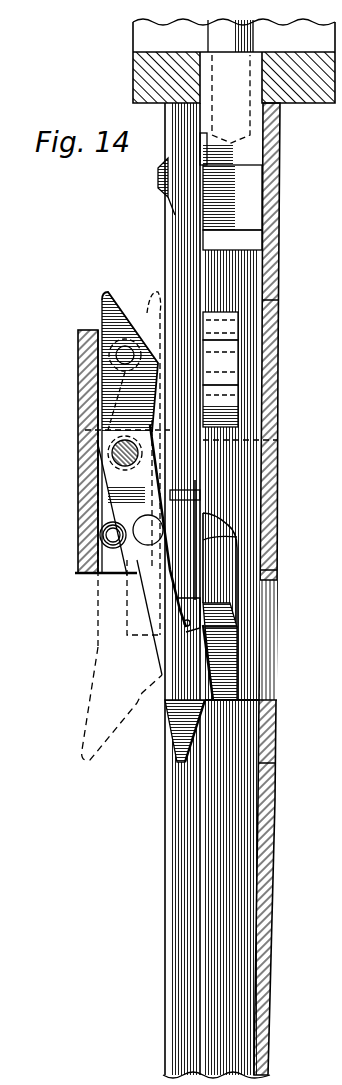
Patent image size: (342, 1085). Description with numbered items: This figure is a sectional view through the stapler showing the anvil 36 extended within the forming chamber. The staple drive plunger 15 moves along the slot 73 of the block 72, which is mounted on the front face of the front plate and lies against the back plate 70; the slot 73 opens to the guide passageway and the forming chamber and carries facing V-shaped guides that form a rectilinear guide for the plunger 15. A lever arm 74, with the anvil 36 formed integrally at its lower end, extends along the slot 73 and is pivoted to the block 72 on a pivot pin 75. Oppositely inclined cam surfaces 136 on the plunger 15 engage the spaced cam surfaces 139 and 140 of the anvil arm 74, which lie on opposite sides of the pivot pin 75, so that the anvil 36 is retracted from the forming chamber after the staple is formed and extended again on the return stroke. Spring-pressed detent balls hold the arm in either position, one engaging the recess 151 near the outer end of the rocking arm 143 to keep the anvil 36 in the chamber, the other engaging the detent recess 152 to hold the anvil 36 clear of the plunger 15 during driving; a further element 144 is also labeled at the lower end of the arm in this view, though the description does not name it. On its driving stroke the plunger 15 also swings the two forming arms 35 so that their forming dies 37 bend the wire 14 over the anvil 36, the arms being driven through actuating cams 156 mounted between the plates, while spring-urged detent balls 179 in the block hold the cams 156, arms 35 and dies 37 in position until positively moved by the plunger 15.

The wire 14 is at (183, 626).
The staple drive plunger 15 is at (193, 240).
The forming arm 35 is at (218, 565).
The anvil 36 is at (225, 623).
The forming die 37 is at (190, 543).
The back plate 70 is at (278, 427).
The block 72 is at (78, 378).
The slot 73 is at (153, 342).
The lever arm 74 is at (102, 302).
The pivot pin 75 is at (112, 452).
The cam surface 136 is at (158, 184).
The cam surface 139 is at (150, 380).
The cam surface 140 is at (156, 516).
The rocking arm 143 is at (150, 593).
The wedge tip 144 is at (192, 745).
The recess 151 is at (100, 350).
The detent recess 152 is at (128, 595).
The actuating cam 156 is at (219, 353).
The detent ball 179 is at (262, 441).